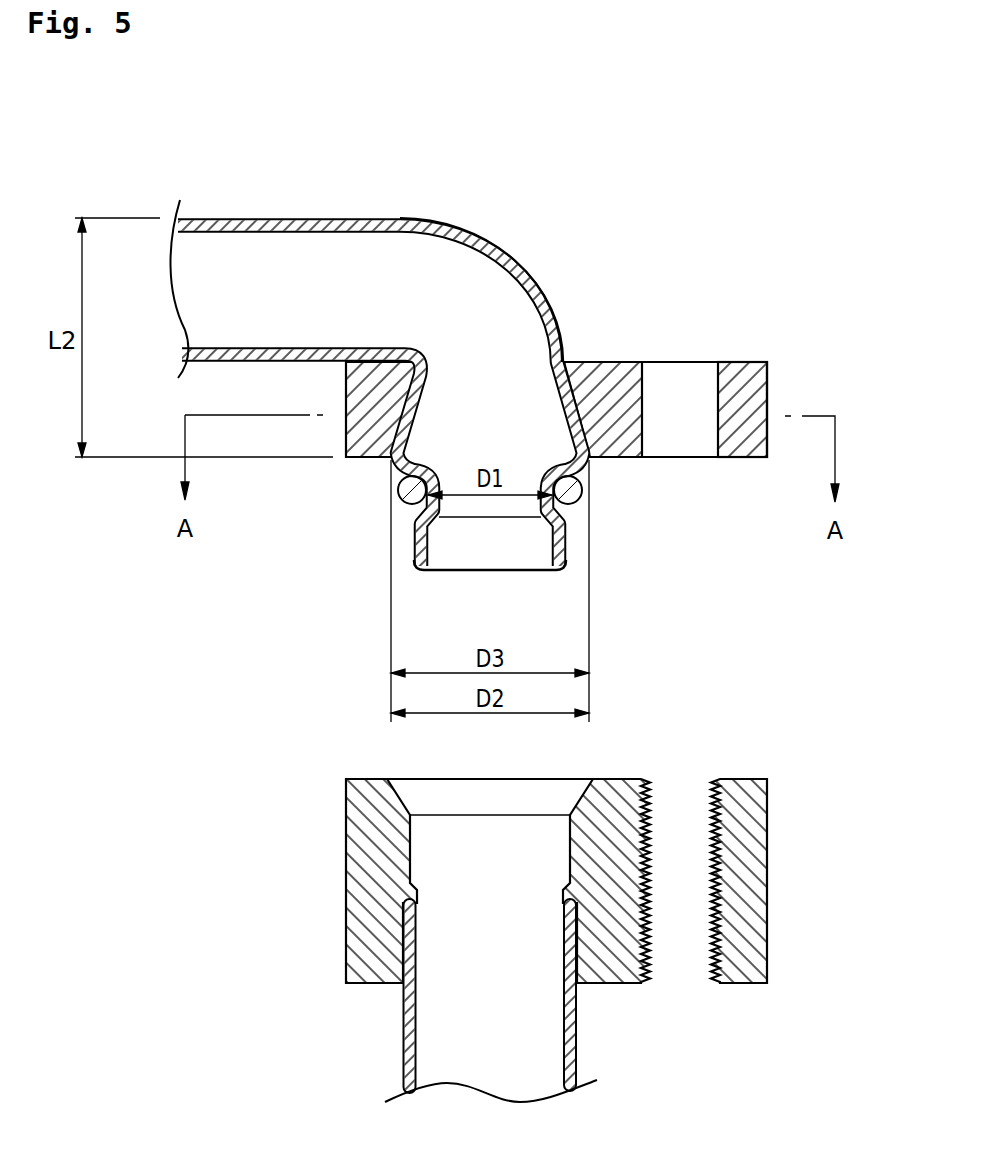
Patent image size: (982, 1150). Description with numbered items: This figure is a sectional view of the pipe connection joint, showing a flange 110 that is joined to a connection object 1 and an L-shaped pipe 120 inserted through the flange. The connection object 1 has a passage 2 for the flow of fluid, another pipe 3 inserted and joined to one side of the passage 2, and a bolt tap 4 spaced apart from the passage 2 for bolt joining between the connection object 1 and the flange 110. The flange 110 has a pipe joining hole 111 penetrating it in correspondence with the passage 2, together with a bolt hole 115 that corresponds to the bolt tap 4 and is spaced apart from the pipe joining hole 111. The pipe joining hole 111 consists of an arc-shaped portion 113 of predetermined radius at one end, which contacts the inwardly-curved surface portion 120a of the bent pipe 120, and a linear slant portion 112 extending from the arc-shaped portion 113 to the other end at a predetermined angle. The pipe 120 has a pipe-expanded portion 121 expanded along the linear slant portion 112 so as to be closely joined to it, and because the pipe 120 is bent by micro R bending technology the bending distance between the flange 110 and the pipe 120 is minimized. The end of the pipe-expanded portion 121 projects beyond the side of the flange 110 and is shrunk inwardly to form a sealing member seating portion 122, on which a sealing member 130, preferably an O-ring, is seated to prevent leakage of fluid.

The connection object 1 is at (563, 881).
The passage 2 is at (408, 851).
The another pipe 3 is at (407, 1028).
The bolt tap 4 is at (716, 922).
The flange 110 is at (535, 460).
The pipe joining hole 111 is at (455, 462).
The linear slant portion 112 is at (398, 420).
The arc-shaped portion 113 is at (392, 388).
The bolt hole 115 is at (740, 384).
The pipe 120 is at (376, 371).
The inwardly-curved surface portion 120a is at (424, 372).
The pipe-expanded portion 121 is at (553, 424).
The sealing member seating portion 122 is at (415, 506).
The sealing member 130 is at (574, 498).